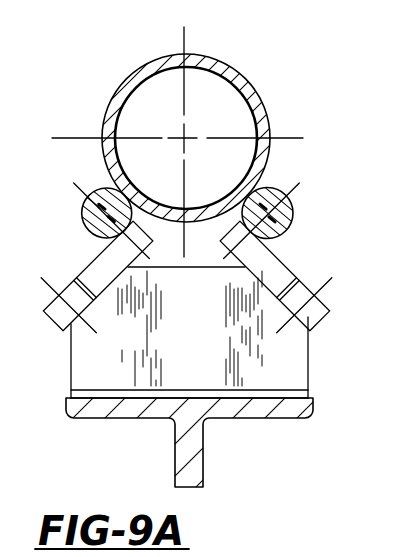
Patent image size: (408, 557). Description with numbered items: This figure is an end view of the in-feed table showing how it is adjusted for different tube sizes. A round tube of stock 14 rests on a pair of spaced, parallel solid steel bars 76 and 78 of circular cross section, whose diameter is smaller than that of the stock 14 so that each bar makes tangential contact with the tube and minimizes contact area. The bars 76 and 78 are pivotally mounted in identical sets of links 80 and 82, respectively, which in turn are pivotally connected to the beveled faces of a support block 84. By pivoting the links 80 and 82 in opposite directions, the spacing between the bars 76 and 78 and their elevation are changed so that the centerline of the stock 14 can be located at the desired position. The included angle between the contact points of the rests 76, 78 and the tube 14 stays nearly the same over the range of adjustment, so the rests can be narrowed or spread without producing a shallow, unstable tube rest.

The stock 14 is at (247, 79).
The solid steel bar 76 is at (292, 207).
The solid steel bar 78 is at (100, 190).
The link 80 is at (291, 272).
The link 82 is at (100, 257).
The support block 84 is at (309, 376).